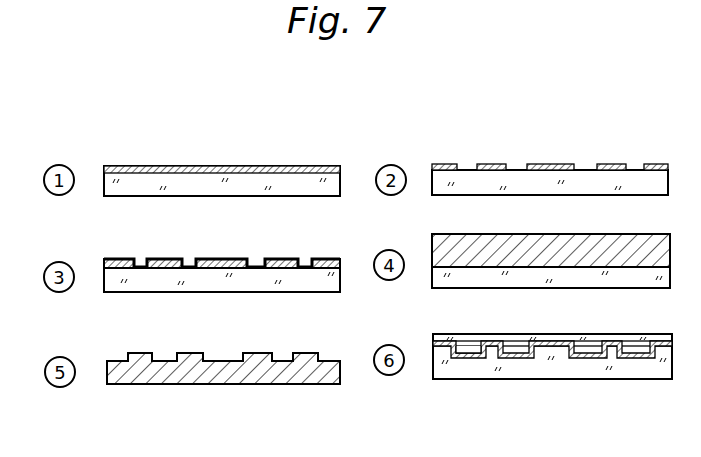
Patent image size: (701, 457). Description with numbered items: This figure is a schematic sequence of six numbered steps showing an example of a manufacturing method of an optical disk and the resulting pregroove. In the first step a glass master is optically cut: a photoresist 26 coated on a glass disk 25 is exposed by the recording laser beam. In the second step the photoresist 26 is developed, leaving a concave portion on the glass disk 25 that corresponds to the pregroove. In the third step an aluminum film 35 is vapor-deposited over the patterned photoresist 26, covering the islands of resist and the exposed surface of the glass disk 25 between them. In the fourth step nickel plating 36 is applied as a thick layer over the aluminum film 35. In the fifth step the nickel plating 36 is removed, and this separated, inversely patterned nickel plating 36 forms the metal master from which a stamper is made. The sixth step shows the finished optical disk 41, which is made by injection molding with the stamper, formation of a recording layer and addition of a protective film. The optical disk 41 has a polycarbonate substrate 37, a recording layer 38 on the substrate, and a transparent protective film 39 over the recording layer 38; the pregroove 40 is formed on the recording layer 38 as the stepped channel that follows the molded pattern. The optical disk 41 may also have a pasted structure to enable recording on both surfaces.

The glass disk 25 is at (147, 190).
The photoresist 26 is at (136, 165).
The aluminum film 35 is at (228, 258).
The nickel plating 36 is at (332, 356).
The polycarbonate substrate 37 is at (467, 373).
The recording layer 38 is at (524, 359).
The transparent protective film 39 is at (594, 340).
The pregroove 40 is at (472, 346).
The optical disk 41 is at (544, 360).